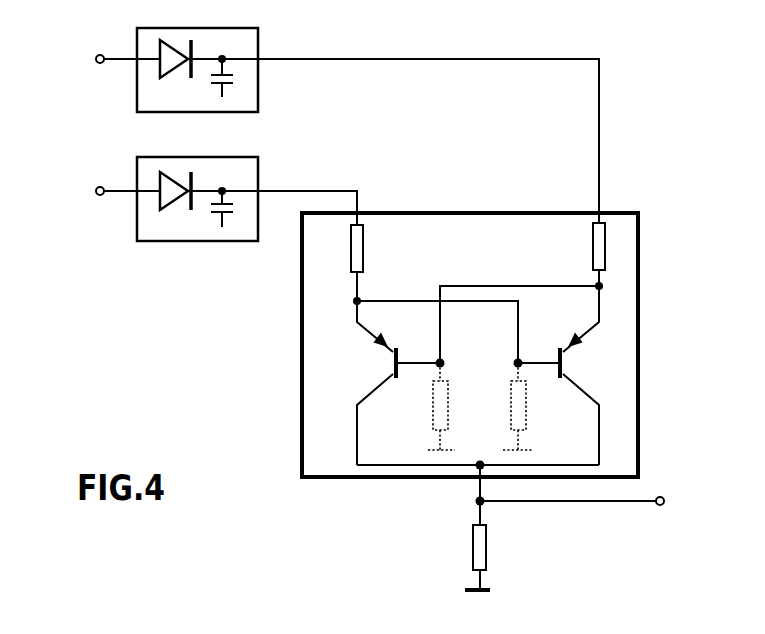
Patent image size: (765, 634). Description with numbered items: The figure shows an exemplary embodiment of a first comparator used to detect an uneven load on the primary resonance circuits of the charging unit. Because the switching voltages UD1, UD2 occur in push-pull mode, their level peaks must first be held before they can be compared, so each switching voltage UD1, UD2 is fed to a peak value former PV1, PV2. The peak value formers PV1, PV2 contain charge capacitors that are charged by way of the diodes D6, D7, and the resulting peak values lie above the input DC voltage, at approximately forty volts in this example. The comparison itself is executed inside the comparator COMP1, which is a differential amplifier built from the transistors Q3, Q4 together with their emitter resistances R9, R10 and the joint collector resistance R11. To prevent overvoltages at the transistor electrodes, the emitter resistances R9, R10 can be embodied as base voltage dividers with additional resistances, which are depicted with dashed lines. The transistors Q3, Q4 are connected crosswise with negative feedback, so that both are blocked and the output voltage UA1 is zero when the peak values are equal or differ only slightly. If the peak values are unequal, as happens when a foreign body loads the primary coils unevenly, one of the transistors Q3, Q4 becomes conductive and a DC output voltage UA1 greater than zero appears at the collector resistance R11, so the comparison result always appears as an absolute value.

The peak value former PV1 is at (197, 56).
The peak value former PV2 is at (197, 185).
The diode D6 is at (205, 74).
The diode D7 is at (205, 205).
The comparator COMP1 is at (470, 319).
The emitter resistance R9 is at (387, 263).
The emitter resistance R10 is at (560, 254).
The joint collector resistance R11 is at (520, 557).
The transistor Q3 is at (383, 383).
The transistor Q4 is at (576, 375).
The switching voltage UD1 is at (102, 62).
The switching voltage UD2 is at (102, 194).
The output voltage UA1 is at (585, 528).